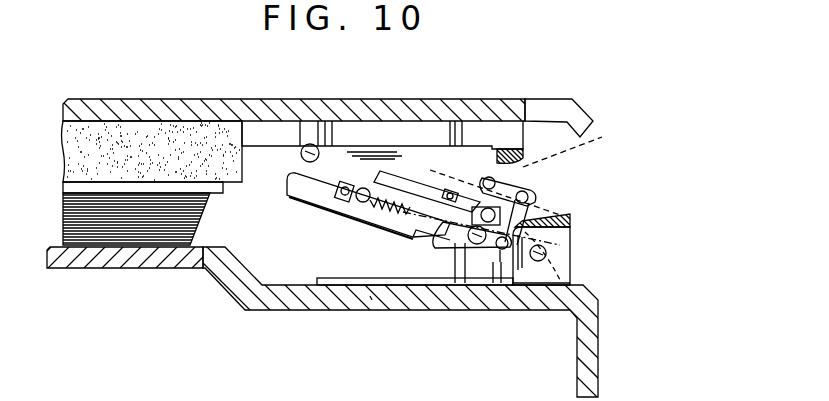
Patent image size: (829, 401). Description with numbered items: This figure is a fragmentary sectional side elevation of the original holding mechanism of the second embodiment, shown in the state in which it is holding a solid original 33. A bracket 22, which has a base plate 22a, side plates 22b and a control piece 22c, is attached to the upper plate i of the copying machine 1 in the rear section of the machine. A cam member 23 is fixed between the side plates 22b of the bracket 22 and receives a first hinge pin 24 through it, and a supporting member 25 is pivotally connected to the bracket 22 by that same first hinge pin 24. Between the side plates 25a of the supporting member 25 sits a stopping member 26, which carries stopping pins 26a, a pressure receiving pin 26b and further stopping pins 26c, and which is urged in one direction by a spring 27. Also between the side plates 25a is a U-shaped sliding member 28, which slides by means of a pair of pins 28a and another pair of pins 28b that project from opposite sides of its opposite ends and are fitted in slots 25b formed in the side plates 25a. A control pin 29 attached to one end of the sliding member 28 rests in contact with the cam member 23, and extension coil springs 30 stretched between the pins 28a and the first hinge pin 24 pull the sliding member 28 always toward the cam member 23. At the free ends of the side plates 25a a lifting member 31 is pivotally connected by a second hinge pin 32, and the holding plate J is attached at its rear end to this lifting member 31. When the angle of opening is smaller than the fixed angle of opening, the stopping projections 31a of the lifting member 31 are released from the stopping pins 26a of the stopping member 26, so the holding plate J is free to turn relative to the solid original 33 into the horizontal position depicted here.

The holding plate J is at (115, 97).
The copying machine 1 is at (604, 360).
The lifting member 31 is at (364, 137).
The stopping projections 31a is at (502, 150).
The second hinge pin 32 is at (301, 150).
The solid original 33 is at (203, 213).
The supporting member 25 is at (368, 223).
The side plates 25a is at (566, 221).
The slots 25b is at (336, 191).
The stopping member 26 is at (535, 172).
The stopping pins 26a is at (534, 194).
The pressure receiving pin 26b is at (444, 240).
The stopping pins 26c is at (498, 175).
The spring 27 is at (577, 144).
The sliding member 28 is at (534, 211).
The pins 28a is at (355, 199).
The pins 28b is at (483, 250).
The control pin 29 is at (500, 252).
The extension coil springs 30 is at (412, 206).
The bracket 22 is at (575, 255).
The base plate 22a is at (357, 275).
The side plates 22b is at (567, 270).
The control piece 22c is at (458, 283).
The cam member 23 is at (497, 275).
The first hinge pin 24 is at (540, 287).
The upper plate i is at (370, 298).